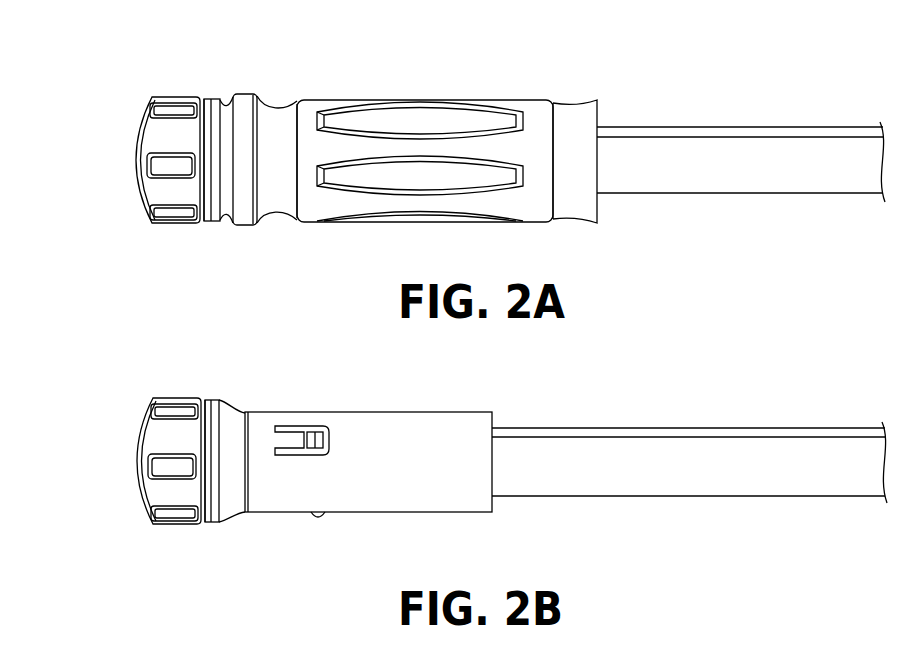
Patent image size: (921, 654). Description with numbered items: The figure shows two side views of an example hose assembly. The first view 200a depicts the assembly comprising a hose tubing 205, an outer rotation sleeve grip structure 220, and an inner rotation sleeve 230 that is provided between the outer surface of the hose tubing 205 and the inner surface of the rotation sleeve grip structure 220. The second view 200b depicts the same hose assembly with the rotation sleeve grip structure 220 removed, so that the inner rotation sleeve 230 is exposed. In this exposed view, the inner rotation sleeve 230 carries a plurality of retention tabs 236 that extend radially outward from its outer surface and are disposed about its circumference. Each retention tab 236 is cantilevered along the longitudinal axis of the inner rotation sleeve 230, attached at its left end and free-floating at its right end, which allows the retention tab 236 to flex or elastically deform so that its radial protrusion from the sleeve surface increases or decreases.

In FIG. 2A, the view of hose assembly 200a is at (121, 65).
In FIG. 2B, the view of hose assembly 200b is at (121, 375).
In FIG. 2A, the inner rotation sleeve 230 is at (226, 99).
In FIG. 2B, the inner rotation sleeve 230 is at (235, 411).
In FIG. 2A, the rotation sleeve grip structure 220 is at (418, 100).
In FIG. 2A, the hose tubing 205 is at (755, 127).
In FIG. 2B, the hose tubing 205 is at (757, 427).
In FIG. 2B, the retention tabs 236 is at (315, 427).